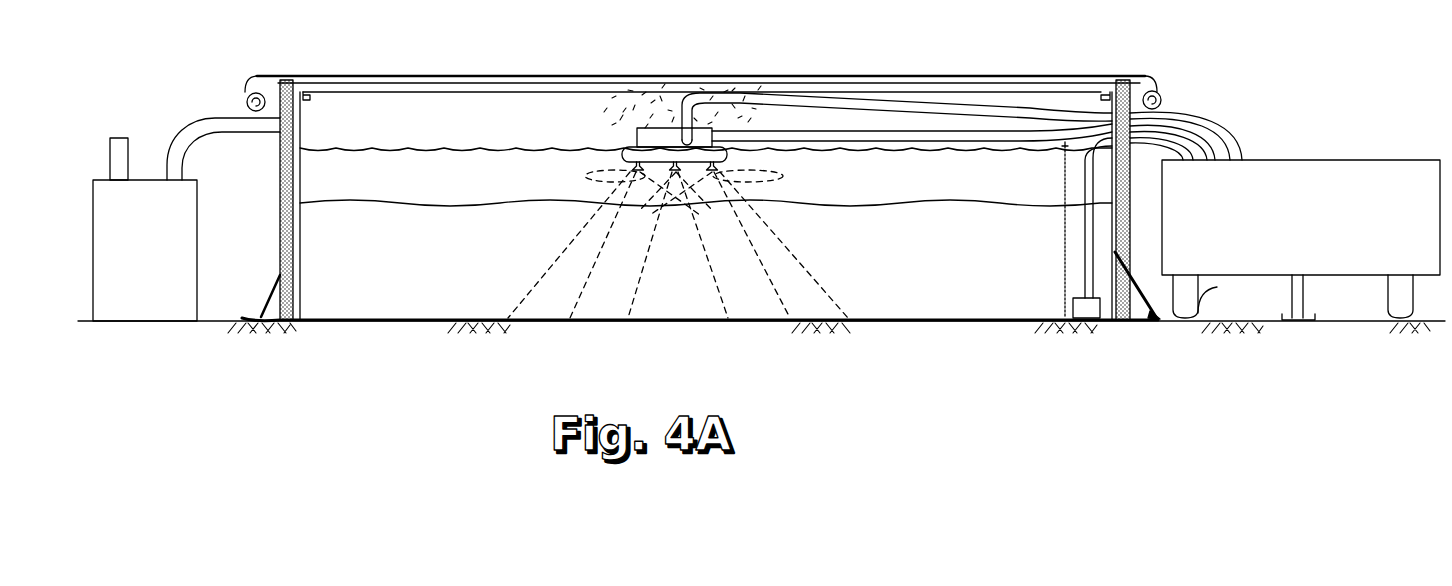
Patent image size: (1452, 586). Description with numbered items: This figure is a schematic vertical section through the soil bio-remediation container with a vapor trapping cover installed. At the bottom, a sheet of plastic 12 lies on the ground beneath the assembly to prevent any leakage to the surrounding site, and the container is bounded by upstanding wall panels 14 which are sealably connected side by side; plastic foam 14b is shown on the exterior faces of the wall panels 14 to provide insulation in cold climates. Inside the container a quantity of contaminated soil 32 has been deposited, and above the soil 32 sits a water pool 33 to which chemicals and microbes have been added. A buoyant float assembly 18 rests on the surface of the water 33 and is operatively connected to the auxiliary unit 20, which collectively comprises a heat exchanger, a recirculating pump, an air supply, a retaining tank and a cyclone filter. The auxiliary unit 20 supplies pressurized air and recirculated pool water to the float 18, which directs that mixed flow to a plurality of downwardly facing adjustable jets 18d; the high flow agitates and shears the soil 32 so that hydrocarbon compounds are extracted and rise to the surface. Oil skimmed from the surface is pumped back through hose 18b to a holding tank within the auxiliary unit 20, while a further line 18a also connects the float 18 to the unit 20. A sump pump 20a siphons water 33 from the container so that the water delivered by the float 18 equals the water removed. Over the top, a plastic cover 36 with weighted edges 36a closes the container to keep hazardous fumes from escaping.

The sheet of plastic 12 is at (252, 316).
The upstanding wall panels 14 is at (301, 147).
The plastic foam 14b is at (287, 199).
The buoyant float assembly 18 is at (647, 139).
The supply hose 18a is at (903, 132).
The hose 18b is at (805, 98).
The adjustable jets 18d is at (612, 183).
The auxiliary unit 20 is at (1301, 240).
The sump pump 20a is at (1137, 143).
The contaminated soil 32 is at (706, 238).
The water pool 33 is at (706, 174).
The plastic cover 36 is at (441, 77).
The weighted edges 36a is at (251, 98).